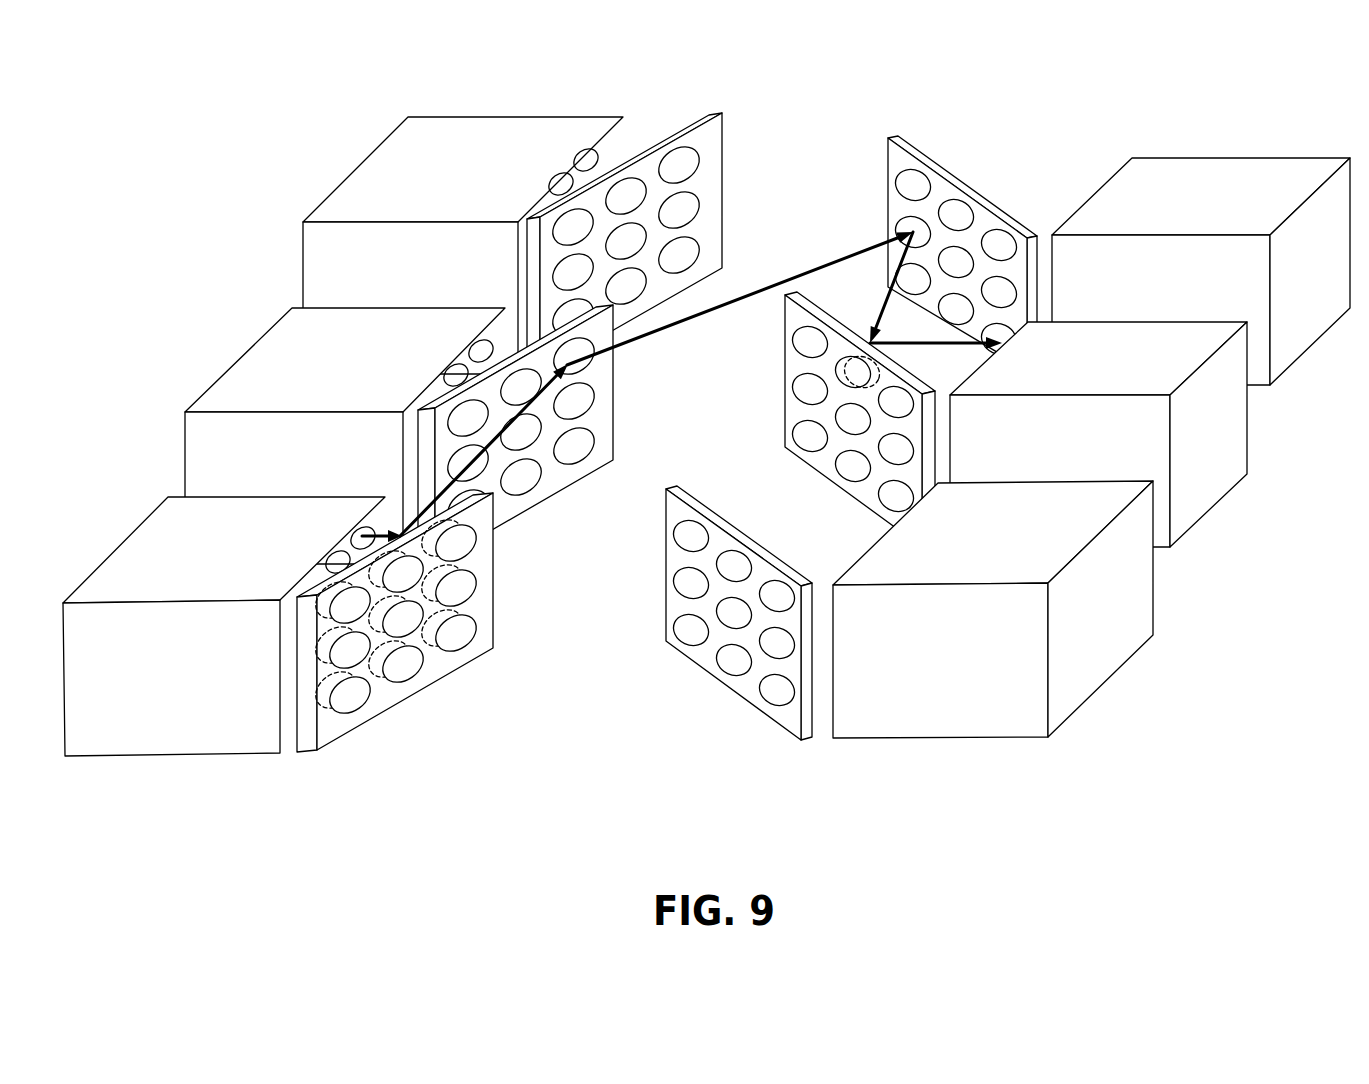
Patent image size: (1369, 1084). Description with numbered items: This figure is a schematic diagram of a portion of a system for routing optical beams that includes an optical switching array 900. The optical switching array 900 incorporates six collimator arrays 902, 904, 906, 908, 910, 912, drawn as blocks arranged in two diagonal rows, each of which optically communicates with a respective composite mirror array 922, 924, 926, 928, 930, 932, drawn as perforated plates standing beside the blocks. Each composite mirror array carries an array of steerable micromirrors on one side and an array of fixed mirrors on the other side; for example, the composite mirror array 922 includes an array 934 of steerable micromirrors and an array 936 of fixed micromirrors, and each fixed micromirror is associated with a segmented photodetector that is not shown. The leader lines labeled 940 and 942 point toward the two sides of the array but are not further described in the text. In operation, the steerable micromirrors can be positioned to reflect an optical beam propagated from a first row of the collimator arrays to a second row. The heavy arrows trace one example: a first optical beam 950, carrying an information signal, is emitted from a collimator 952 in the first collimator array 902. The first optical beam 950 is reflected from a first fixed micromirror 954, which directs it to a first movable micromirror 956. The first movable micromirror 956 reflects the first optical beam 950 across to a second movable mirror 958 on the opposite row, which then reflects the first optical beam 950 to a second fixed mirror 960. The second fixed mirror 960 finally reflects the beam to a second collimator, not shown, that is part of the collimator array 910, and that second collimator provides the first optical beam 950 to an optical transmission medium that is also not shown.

The optical switching array 900 is at (155, 134).
The collimator array 902 is at (170, 545).
The collimator array 904 is at (288, 357).
The collimator array 906 is at (408, 170).
The collimator array 908 is at (1163, 188).
The collimator array 910 is at (1070, 347).
The collimator array 912 is at (972, 518).
The composite mirror array 922 is at (435, 670).
The composite mirror array 924 is at (555, 473).
The composite mirror array 926 is at (718, 182).
The composite mirror array 928 is at (890, 163).
The composite mirror array 930 is at (797, 359).
The composite mirror array 932 is at (680, 560).
The array of steerable micromirrors 934 is at (504, 604).
The array of fixed micromirrors 936 is at (282, 636).
The input side 940 is at (189, 830).
The output side 942 is at (931, 800).
The first optical beam 950 is at (730, 305).
The collimator 952 is at (360, 536).
The first fixed micromirror 954 is at (417, 515).
The first movable micromirror 956 is at (592, 360).
The second movable mirror 958 is at (905, 230).
The second fixed mirror 960 is at (885, 370).